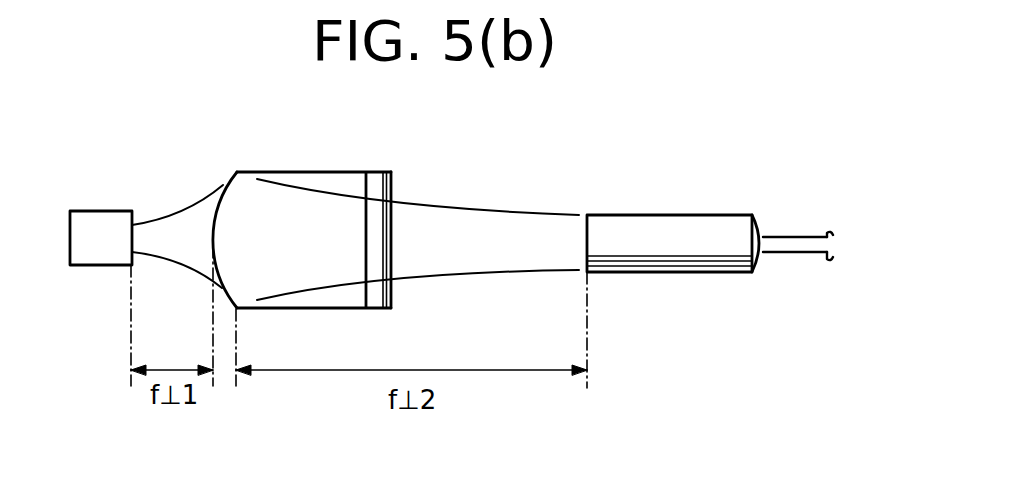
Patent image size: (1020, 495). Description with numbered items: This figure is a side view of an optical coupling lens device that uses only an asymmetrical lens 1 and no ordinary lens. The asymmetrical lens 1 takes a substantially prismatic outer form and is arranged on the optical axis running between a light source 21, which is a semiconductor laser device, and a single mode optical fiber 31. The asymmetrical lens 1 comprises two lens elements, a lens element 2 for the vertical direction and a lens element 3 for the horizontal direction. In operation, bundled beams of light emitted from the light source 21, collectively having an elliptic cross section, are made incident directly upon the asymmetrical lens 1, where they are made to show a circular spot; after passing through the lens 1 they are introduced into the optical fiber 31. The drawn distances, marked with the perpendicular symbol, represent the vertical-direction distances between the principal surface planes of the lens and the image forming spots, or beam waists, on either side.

The asymmetrical lens 1 is at (311, 172).
The lens element 2 is at (217, 214).
The lens element 3 is at (389, 190).
The light source 21 is at (96, 220).
The single mode optical fiber 31 is at (663, 226).